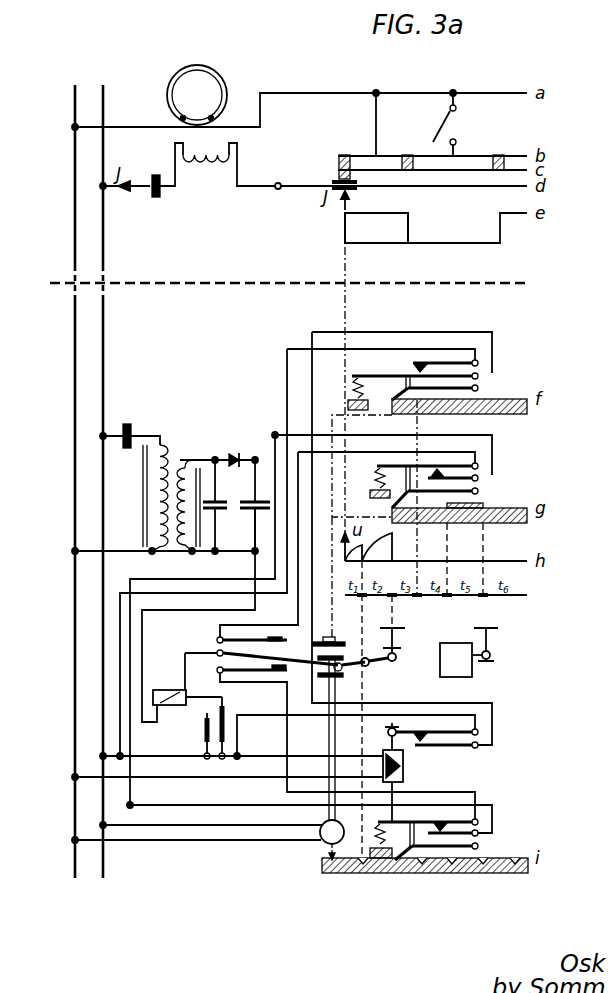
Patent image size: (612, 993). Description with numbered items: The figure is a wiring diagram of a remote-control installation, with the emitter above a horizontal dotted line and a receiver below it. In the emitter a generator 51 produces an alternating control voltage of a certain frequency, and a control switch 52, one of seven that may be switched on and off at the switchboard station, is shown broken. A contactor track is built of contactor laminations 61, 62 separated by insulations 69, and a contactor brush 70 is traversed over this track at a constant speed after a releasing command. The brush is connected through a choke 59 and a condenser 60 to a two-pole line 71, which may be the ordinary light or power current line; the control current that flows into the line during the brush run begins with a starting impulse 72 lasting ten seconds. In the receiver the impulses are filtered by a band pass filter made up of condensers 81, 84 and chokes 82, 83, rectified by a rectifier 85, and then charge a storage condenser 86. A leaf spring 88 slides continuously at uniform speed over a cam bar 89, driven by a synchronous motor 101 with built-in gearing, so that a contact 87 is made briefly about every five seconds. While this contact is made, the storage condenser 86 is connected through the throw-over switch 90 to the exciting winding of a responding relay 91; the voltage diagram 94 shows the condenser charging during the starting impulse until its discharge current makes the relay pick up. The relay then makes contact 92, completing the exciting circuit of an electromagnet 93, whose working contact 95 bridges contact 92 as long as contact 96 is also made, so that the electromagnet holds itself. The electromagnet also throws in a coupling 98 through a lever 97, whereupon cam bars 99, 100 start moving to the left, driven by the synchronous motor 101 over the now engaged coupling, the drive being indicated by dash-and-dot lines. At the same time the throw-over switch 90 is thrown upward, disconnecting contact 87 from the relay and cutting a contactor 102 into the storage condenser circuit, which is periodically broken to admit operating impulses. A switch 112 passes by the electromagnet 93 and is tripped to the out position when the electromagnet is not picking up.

The generator 51 is at (212, 82).
The control switch 52 is at (450, 121).
The choke 59 is at (207, 149).
The condenser 60 is at (154, 193).
The contactor lamination 61 is at (380, 168).
The contactor lamination 62 is at (471, 168).
The insulation 69 is at (500, 153).
The contactor brush 70 is at (337, 178).
The two-pole line 71 is at (80, 255).
The starting impulse 72 is at (376, 228).
The condenser 81 is at (138, 415).
The choke 82 is at (166, 445).
The choke 83 is at (186, 462).
The condenser 84 is at (223, 511).
The rectifier 85 is at (237, 452).
The storage condenser 86 is at (251, 493).
The contact 87 is at (458, 822).
The leaf spring 88 is at (428, 860).
The cam bar 89 is at (505, 848).
The throw-over switch 90 is at (285, 652).
The responding relay 91 is at (160, 706).
The contact 92 is at (226, 715).
The electromagnet 93 is at (403, 770).
The diagram 94 is at (394, 547).
The working contact 95 is at (430, 745).
The contact 96 is at (422, 362).
The lever 97 is at (365, 667).
The coupling 98 is at (348, 660).
The cam bar 99 is at (500, 508).
The cam bar 100 is at (500, 399).
The synchronous motor 101 is at (322, 842).
The contactor 102 is at (445, 470).
The switch 112 is at (448, 650).